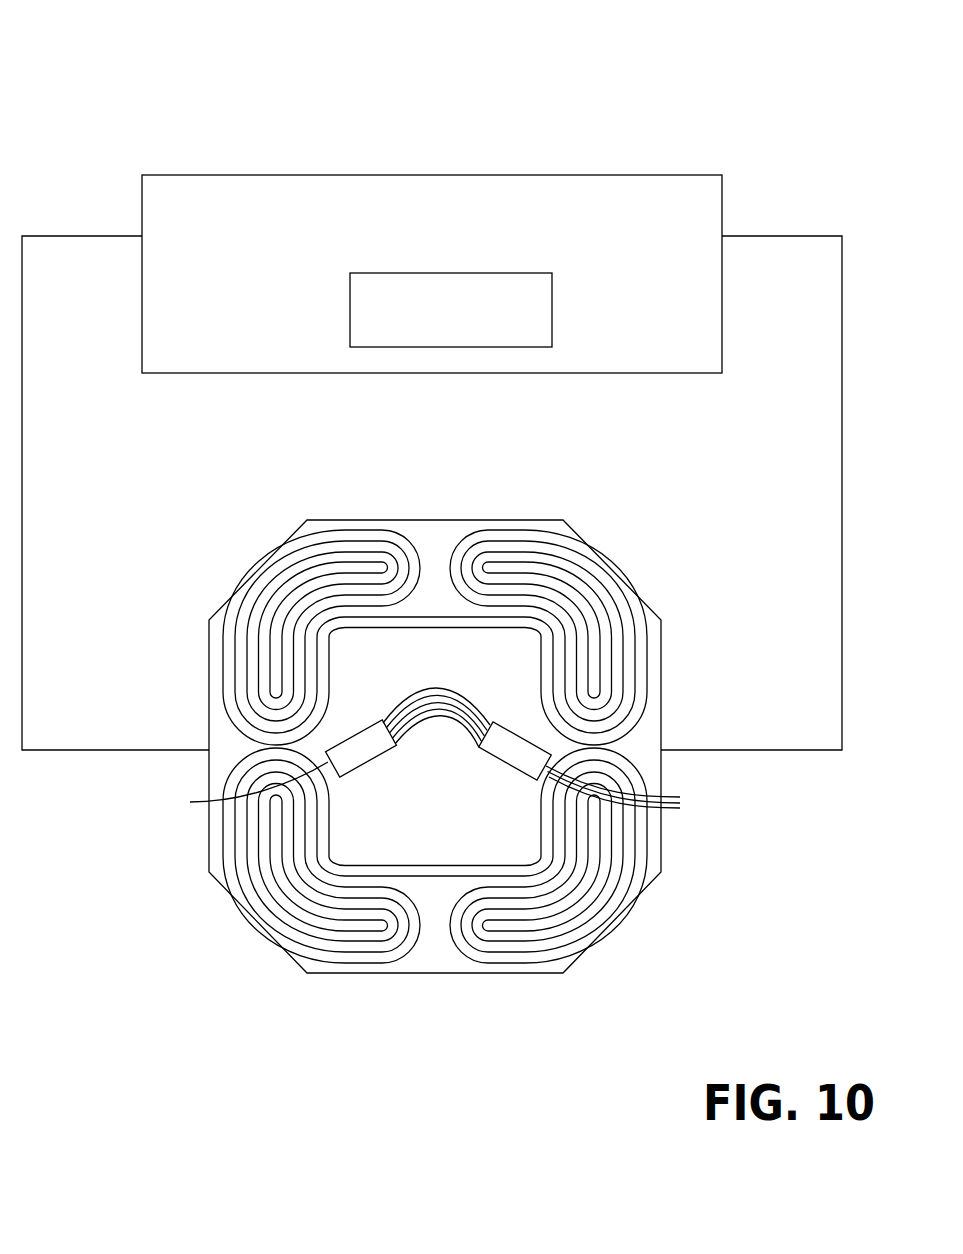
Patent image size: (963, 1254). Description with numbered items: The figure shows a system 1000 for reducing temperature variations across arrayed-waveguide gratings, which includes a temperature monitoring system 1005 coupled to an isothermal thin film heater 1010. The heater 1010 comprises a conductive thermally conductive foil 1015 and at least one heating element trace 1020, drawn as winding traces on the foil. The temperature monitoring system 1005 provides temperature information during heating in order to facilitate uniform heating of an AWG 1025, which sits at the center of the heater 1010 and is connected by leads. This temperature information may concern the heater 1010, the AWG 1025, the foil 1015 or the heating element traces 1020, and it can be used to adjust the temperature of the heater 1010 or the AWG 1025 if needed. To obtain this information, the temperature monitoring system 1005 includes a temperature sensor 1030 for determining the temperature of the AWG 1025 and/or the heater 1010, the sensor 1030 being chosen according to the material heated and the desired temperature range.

The system 1000 is at (203, 45).
The temperature monitoring system 1005 is at (432, 244).
The isothermal thin film heater 1010 is at (434, 717).
The conductive thermally conductive foil 1015 is at (443, 520).
The heating element trace 1020 is at (610, 558).
The AWG 1025 is at (365, 766).
The temperature sensor 1030 is at (552, 317).